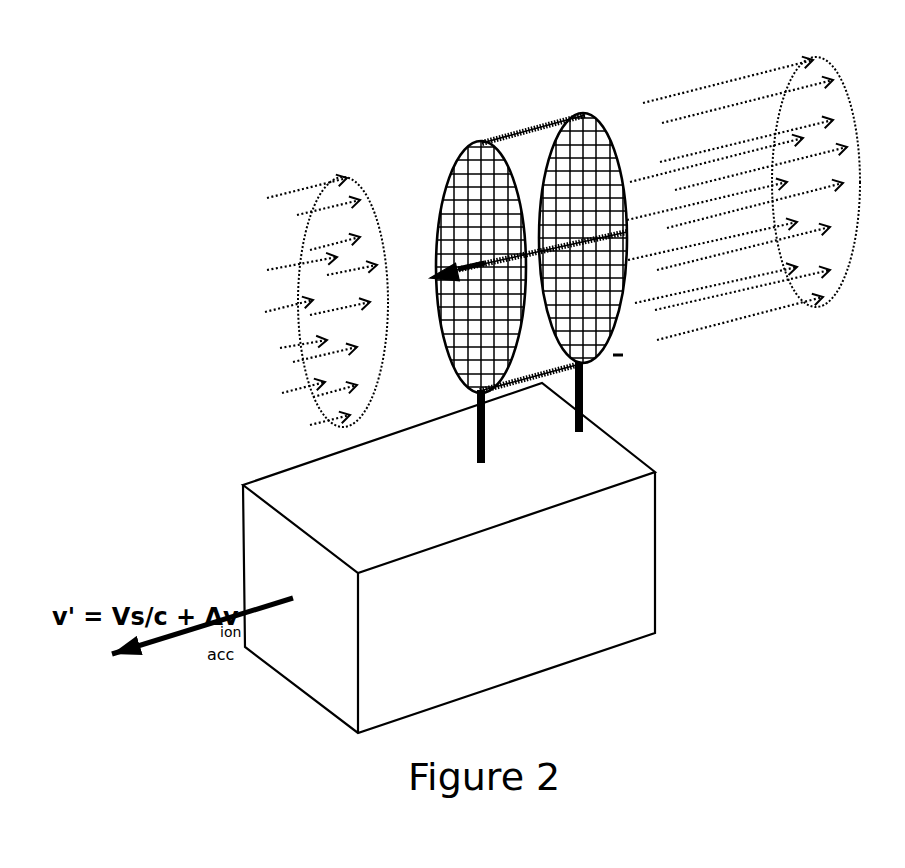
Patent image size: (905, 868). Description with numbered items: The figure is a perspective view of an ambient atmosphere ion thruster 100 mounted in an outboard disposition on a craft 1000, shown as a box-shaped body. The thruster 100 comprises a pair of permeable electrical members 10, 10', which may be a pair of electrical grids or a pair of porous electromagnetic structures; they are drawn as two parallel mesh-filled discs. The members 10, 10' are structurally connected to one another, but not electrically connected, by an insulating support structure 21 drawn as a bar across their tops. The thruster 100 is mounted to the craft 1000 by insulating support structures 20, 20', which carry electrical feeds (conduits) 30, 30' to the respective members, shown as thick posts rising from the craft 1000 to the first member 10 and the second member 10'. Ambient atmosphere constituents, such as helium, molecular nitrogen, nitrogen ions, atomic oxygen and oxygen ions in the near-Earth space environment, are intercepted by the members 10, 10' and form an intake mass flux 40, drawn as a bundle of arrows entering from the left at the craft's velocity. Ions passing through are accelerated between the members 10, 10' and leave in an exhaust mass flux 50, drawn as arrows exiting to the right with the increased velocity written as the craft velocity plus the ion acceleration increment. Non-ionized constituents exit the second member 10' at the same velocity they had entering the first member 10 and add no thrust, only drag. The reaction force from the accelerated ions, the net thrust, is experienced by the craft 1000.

The permeable electrical member 10 is at (437, 250).
The permeable electrical member 10' is at (615, 203).
The insulating support structure 21 is at (506, 126).
The intake mass flux 40 is at (285, 307).
The exhaust mass flux 50 is at (748, 76).
The ambient atmosphere ion thruster 100 is at (220, 202).
The insulating support structure 20 is at (610, 441).
The electrical feed (conduit) 30 is at (610, 441).
The insulating support structure 20' is at (715, 395).
The electrical feed (conduit) 30' is at (715, 395).
The craft 1000 is at (616, 571).